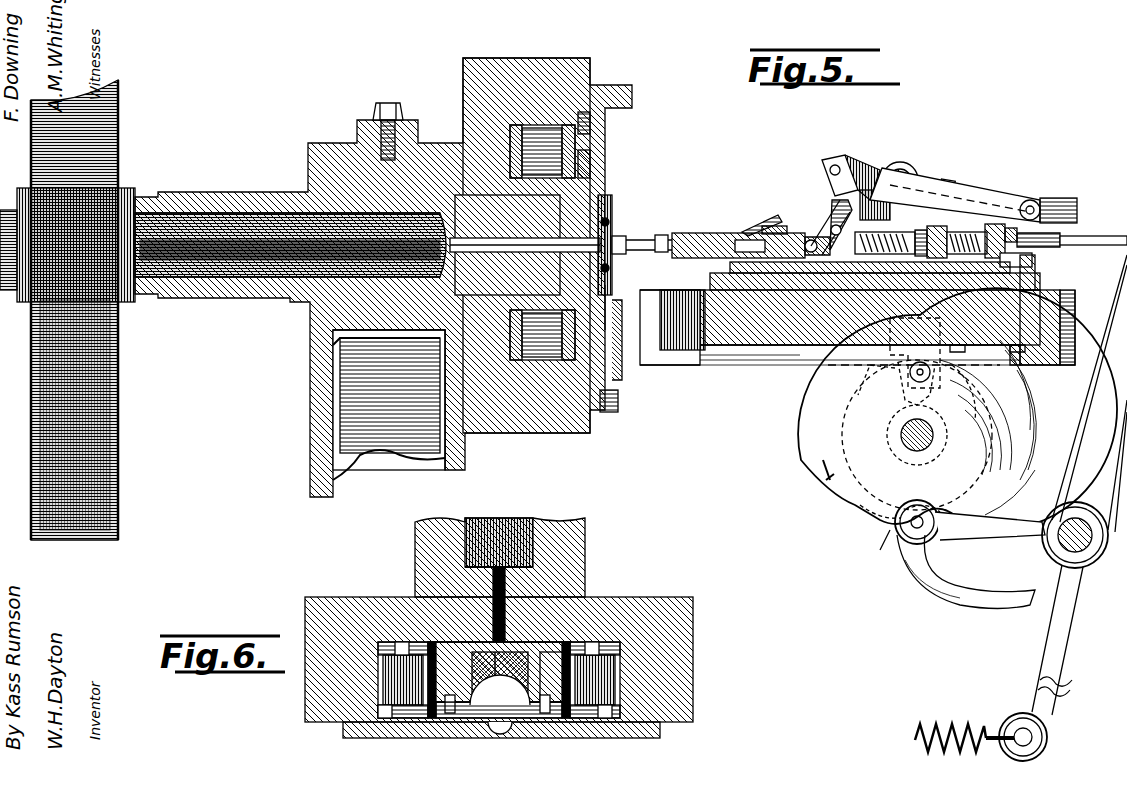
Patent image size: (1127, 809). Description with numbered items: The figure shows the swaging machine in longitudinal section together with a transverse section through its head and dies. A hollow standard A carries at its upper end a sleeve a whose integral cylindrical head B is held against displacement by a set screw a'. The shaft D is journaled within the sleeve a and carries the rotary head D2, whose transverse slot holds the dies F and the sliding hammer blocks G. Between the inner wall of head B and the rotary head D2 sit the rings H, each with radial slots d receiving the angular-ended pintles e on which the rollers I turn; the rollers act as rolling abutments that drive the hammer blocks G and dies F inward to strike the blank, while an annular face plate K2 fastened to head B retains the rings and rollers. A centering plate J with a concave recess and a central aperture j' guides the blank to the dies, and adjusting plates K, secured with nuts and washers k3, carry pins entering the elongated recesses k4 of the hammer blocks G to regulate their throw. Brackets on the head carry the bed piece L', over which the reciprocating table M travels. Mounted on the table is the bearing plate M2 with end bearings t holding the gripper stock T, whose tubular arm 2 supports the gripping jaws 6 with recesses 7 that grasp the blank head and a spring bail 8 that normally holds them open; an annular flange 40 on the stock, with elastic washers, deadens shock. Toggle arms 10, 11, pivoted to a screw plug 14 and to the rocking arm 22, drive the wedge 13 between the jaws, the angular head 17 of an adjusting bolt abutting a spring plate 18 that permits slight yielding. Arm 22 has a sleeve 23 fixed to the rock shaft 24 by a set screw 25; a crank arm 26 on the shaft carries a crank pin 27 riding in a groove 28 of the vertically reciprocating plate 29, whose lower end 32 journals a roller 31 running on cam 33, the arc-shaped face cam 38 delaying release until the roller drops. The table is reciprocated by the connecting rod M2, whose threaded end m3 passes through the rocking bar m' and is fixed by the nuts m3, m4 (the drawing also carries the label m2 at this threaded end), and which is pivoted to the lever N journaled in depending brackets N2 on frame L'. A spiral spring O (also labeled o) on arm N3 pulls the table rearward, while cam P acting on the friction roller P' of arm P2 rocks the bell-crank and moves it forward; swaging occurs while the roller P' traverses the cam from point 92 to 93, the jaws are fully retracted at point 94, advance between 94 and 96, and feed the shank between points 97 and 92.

In FIG. 5, the shaft D is at (118, 383).
In FIG. 5, the sleeve a is at (383, 277).
In FIG. 5, the set screw a' is at (388, 119).
In FIG. 5, the cylindrical head B is at (515, 68).
In FIG. 5, the rotary head D2 is at (347, 245).
In FIG. 6, the rotary head D2 is at (540, 640).
In FIG. 5, the die F is at (525, 244).
In FIG. 6, the die F is at (506, 676).
In FIG. 5, the roller I is at (545, 130).
In FIG. 6, the roller I is at (378, 672).
In FIG. 5, the ring H is at (512, 325).
In FIG. 6, the ring H is at (430, 645).
In FIG. 5, the radial slot d is at (592, 130).
In FIG. 6, the radial slot d is at (400, 645).
In FIG. 5, the pintle e is at (592, 153).
In FIG. 6, the pintle e is at (378, 645).
In FIG. 5, the centering plate J is at (612, 287).
In FIG. 6, the centering plate J is at (500, 717).
In FIG. 5, the pin J' is at (636, 256).
In FIG. 5, the annular face plate K2 is at (610, 412).
In FIG. 6, the annular face plate K2 is at (660, 730).
In FIG. 5, the hollow standard A is at (310, 435).
In FIG. 5, the gripping jaw 6 is at (661, 230).
In FIG. 5, the recess 7 is at (664, 252).
In FIG. 5, the gripper head or stock T is at (738, 233).
In FIG. 5, the spring bail 8 is at (762, 215).
In FIG. 5, the end bearing or guide t is at (889, 221).
In FIG. 5, the tubular arm 2 is at (816, 235).
In FIG. 5, the toggle lever arm 10 is at (830, 232).
In FIG. 5, the toggle lever arm 11 is at (835, 218).
In FIG. 5, the rocking arm 22 is at (851, 168).
In FIG. 5, the sleeve 23 is at (905, 170).
In FIG. 5, the rock-shaft 24 is at (875, 202).
In FIG. 5, the set screw 25 is at (950, 182).
In FIG. 5, the crank-arm 26 is at (1005, 200).
In FIG. 5, the crank pin 27 is at (1038, 196).
In FIG. 5, the groove 28 is at (1077, 210).
In FIG. 5, the screw plug 14 is at (886, 233).
In FIG. 5, the wedge 13 is at (931, 250).
In FIG. 5, the angular shaped head 17 is at (957, 248).
In FIG. 5, the spring plate 18 is at (993, 233).
In FIG. 5, the nut m4 is at (1042, 238).
In FIG. 5, the rod m2 is at (1058, 250).
In FIG. 5, the rocking bar m' is at (1029, 271).
In FIG. 5, the connecting rod M2 is at (800, 345).
In FIG. 5, the reciprocating table M is at (712, 277).
In FIG. 5, the bed piece or frame L' is at (672, 341).
In FIG. 5, the annular flange 40 is at (862, 327).
In FIG. 5, the screw threaded end m3 is at (1015, 312).
In FIG. 5, the cam P is at (957, 409).
In FIG. 5, the spiral spring O is at (935, 432).
In FIG. 5, the cam 33 is at (915, 435).
In FIG. 5, the lower end of plate 32 is at (962, 392).
In FIG. 5, the arc shaped face cam 38 is at (896, 383).
In FIG. 5, the vertically reciprocating frame or plate 29 is at (914, 353).
In FIG. 5, the roller 31 is at (930, 365).
In FIG. 5, the cam point 92 is at (818, 494).
In FIG. 5, the cam point 97 is at (879, 491).
In FIG. 5, the cam point 94 is at (922, 494).
In FIG. 5, the friction roller P' is at (898, 522).
In FIG. 5, the cam point 96 is at (880, 543).
In FIG. 5, the cam point 93 is at (1025, 514).
In FIG. 5, the depending bracket N2 is at (1058, 535).
In FIG. 5, the lever N is at (1102, 556).
In FIG. 5, the arm of lever N N3 is at (1041, 663).
In FIG. 5, the arm P2 is at (966, 572).
In FIG. 5, the spiral spring o is at (964, 725).
In FIG. 6, the block E is at (499, 680).
In FIG. 6, the sliding hammer block G is at (284, 700).
In FIG. 6, the washer k3 is at (453, 692).
In FIG. 6, the adjusting plate K is at (450, 720).
In FIG. 6, the central aperture j' is at (491, 741).
In FIG. 6, the elongated recess k4 is at (548, 720).